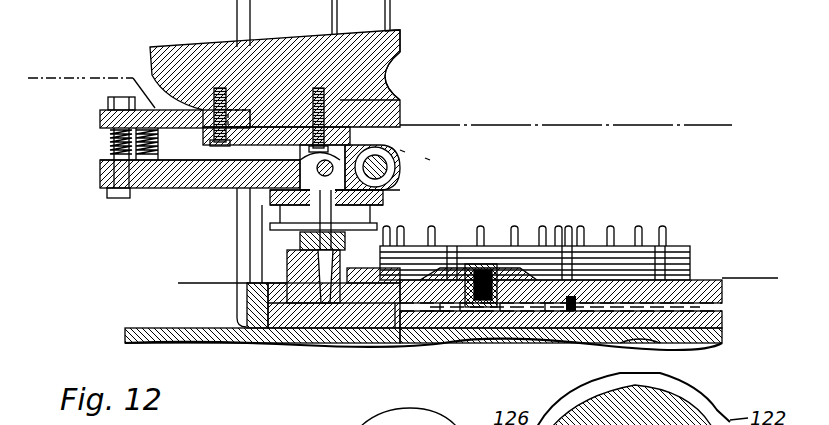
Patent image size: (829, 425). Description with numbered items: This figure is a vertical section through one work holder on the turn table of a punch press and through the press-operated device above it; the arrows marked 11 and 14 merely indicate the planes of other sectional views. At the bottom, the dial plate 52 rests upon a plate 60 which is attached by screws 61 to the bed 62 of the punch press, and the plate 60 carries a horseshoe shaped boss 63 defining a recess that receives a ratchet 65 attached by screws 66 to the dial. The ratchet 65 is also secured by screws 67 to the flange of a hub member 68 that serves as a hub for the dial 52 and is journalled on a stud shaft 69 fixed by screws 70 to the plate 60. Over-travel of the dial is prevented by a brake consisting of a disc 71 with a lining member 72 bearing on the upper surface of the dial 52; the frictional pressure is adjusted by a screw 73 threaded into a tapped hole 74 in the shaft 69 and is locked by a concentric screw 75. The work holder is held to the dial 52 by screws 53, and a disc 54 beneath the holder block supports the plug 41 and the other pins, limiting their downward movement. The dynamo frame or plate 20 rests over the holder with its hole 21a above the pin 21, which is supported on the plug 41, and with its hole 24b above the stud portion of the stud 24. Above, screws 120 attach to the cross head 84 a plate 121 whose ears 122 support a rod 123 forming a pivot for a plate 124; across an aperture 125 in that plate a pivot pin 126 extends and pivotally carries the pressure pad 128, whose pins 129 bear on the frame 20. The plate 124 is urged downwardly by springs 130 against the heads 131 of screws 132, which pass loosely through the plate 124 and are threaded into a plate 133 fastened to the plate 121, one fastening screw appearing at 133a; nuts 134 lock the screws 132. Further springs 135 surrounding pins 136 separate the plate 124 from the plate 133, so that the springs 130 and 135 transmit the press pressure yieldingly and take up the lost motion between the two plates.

The section line 11- 11 is at (41, 78).
The section line 14- 14 is at (197, 282).
The plate or frame 20 is at (355, 240).
The pin 21 is at (260, 278).
The hole 21a is at (277, 240).
The stud 24 is at (325, 330).
The hole 24b is at (397, 187).
The plug 41 is at (293, 328).
The dial plate 52 is at (702, 282).
The screws 53 is at (360, 323).
The disc 54 is at (253, 345).
The plate 60 is at (722, 316).
The screws 61 is at (637, 333).
The bed 62 is at (722, 335).
The boss 63 is at (722, 305).
The ratchet 65 is at (573, 312).
The screws 66 is at (555, 312).
The screws 67 is at (508, 313).
The hub member 68 is at (437, 323).
The stud shaft 69 is at (463, 323).
The screws 70 is at (445, 327).
The disc 71 is at (460, 262).
The lining member 72 is at (400, 322).
The screw 73 is at (503, 245).
The tapped hole 74 is at (477, 320).
The screw 75 is at (492, 243).
The cross head 84 is at (396, 32).
The screws 120 is at (343, 97).
The plate 121 is at (395, 98).
The ears 122 is at (405, 152).
The rod 123 is at (428, 160).
The plate 124 is at (192, 180).
The aperture 125 is at (246, 186).
The pivot pin 126 is at (312, 142).
The pressure pad 128 is at (288, 210).
The pins 129 is at (283, 240).
The springs 130 is at (110, 148).
The heads 131 is at (108, 195).
The screws 132 is at (103, 177).
The plate 133 is at (100, 118).
The screw 133a is at (220, 85).
The nuts 134 is at (110, 100).
The springs 135 is at (158, 143).
The pins 136 is at (150, 188).